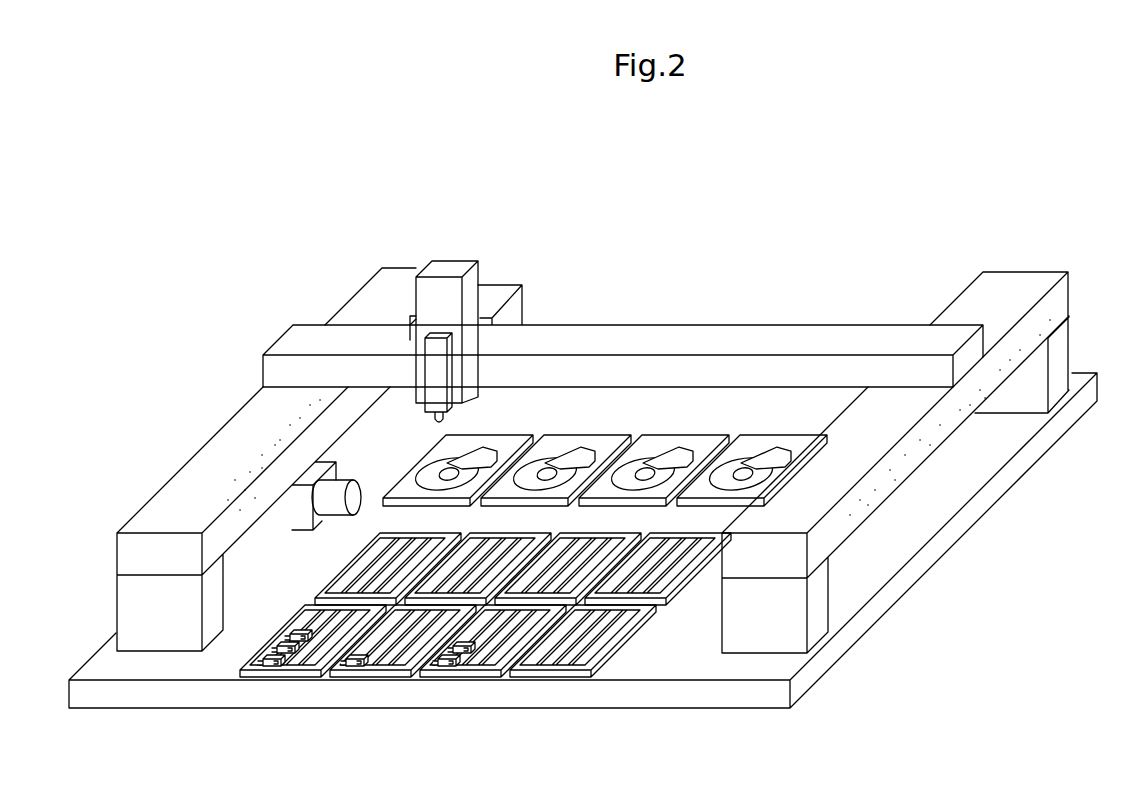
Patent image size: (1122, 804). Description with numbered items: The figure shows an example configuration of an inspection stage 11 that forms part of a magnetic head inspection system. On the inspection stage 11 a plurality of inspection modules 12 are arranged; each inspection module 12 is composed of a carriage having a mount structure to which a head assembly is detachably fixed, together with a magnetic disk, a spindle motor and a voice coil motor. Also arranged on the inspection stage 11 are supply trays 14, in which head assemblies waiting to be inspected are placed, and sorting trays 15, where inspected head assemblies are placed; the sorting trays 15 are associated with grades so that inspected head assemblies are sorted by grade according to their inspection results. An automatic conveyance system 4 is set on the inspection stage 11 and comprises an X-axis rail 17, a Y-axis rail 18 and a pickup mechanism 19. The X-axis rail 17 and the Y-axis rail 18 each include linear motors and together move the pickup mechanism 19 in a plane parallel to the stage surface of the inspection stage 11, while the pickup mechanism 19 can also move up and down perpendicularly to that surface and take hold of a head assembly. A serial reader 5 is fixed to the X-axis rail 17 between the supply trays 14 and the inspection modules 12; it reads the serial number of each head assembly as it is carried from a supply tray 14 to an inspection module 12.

The automatic conveyance system 4 is at (883, 181).
The serial reader 5 is at (334, 463).
The inspection stage 11 is at (868, 575).
The inspection module 12 is at (487, 434).
The supply tray 14 is at (277, 671).
The sorting tray 15 is at (547, 673).
The X-axis rail 17 is at (1008, 285).
The Y-axis rail 18 is at (677, 337).
The pickup mechanism 19 is at (452, 347).